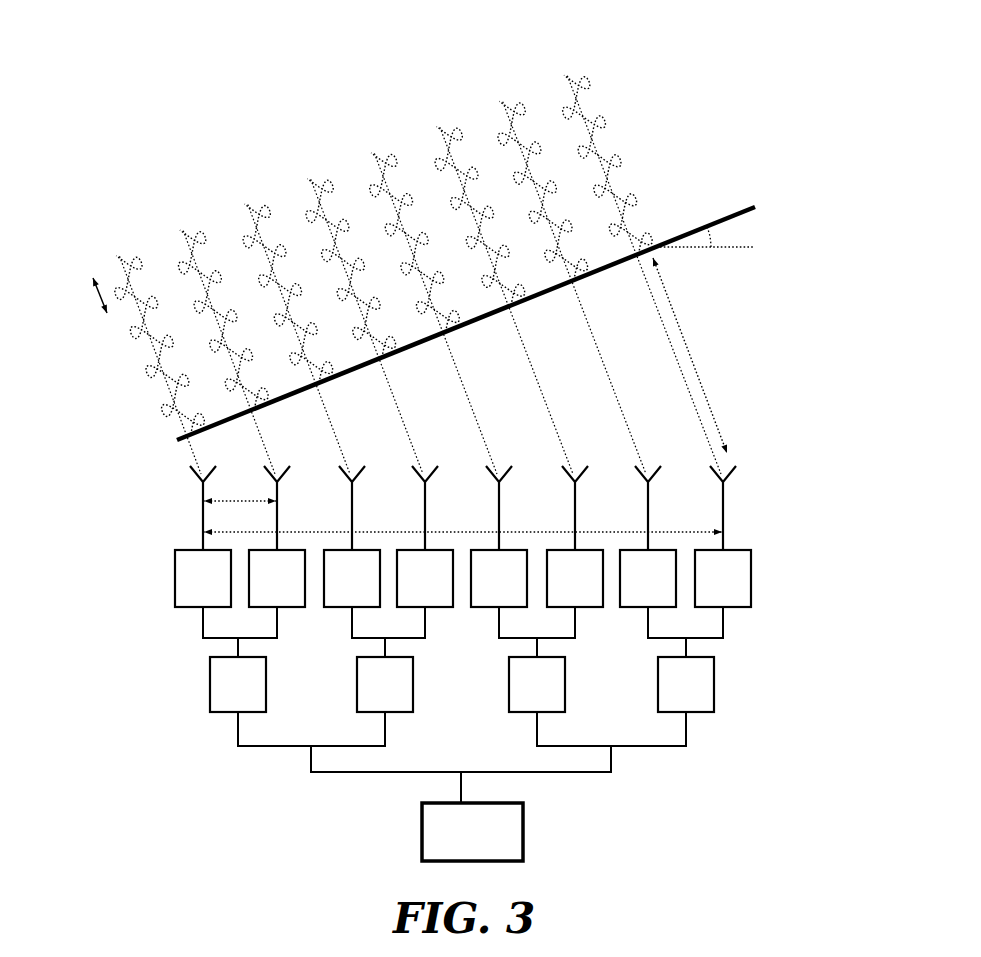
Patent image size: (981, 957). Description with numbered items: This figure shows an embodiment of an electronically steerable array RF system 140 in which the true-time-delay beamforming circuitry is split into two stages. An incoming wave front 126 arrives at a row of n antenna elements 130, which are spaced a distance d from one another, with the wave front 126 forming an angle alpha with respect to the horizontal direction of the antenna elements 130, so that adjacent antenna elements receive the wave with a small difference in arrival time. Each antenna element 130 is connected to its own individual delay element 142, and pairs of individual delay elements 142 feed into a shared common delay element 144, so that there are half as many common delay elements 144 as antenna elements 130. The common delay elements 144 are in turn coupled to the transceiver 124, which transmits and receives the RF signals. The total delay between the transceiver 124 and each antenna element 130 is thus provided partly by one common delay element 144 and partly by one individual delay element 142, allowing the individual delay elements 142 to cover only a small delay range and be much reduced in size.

The electronically steerable array RF system 140 is at (111, 195).
The wave front 126 is at (736, 211).
The antenna elements 130 is at (725, 505).
The individual delay elements 142 is at (176, 556).
The common delay elements 144 is at (208, 692).
The transceiver 124 is at (525, 824).